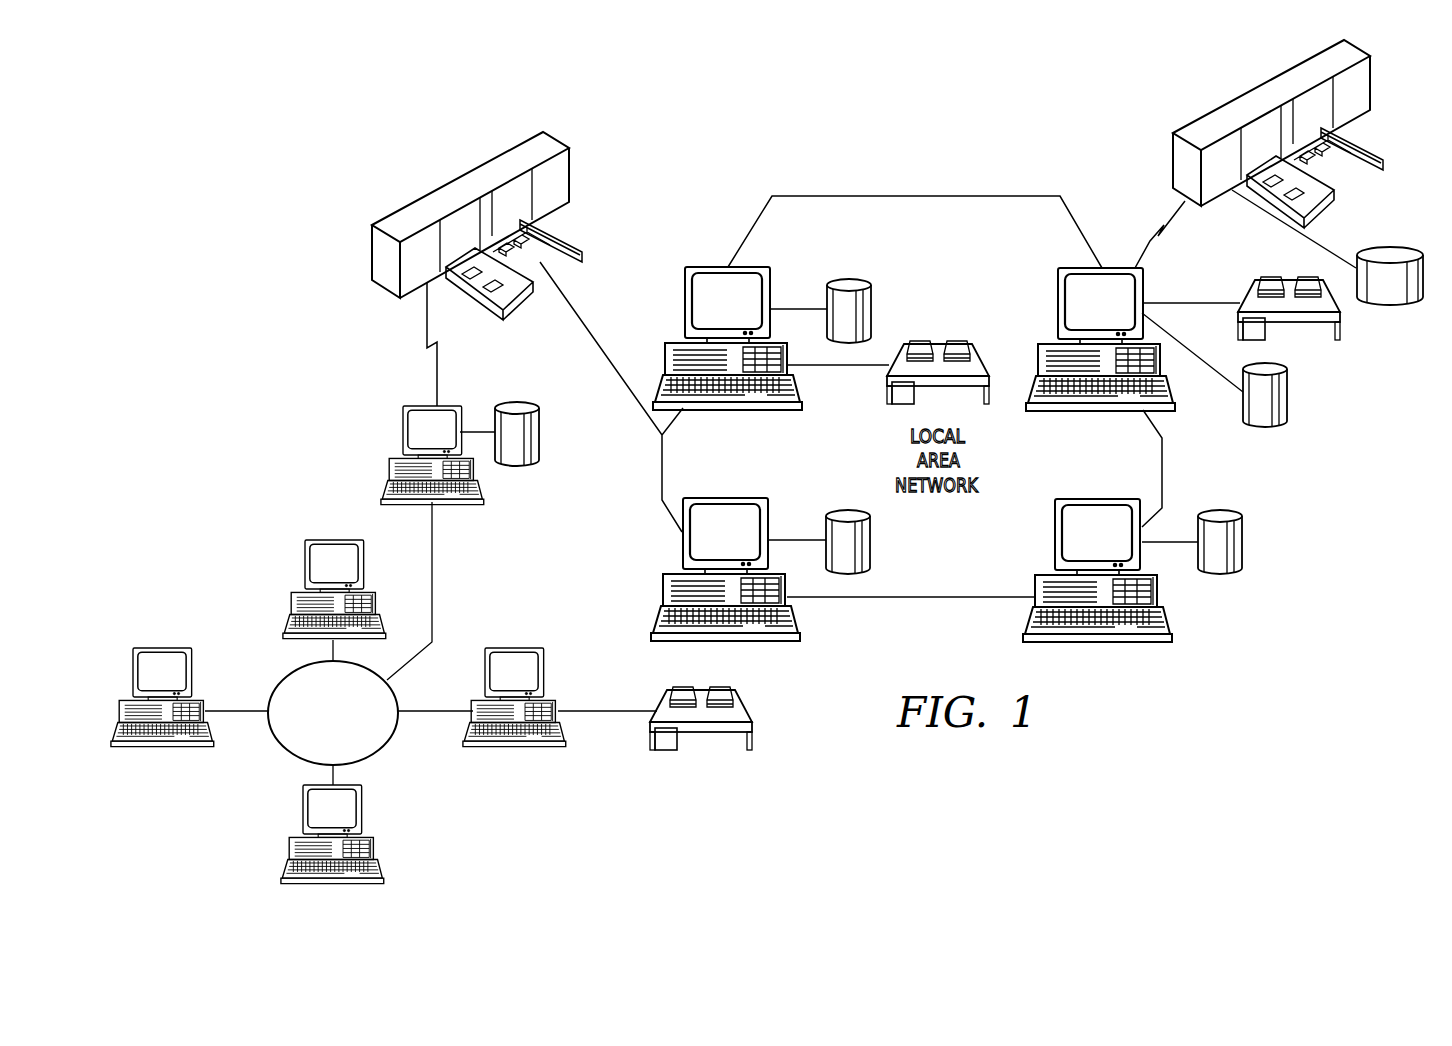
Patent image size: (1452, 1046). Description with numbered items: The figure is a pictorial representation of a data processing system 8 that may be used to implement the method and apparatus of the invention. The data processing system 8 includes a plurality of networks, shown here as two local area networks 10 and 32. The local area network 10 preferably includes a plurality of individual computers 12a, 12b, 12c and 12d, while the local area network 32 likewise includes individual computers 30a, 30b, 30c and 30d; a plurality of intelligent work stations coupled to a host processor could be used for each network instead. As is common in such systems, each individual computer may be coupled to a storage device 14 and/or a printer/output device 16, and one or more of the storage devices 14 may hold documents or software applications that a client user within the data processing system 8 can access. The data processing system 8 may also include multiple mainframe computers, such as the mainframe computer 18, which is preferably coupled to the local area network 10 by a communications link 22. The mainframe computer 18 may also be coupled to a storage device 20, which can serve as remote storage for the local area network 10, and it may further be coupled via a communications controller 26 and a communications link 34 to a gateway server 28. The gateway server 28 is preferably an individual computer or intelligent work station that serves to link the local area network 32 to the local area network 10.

The data processing system 8 is at (864, 174).
The local area network 10 is at (923, 600).
The individual computer 12a is at (707, 265).
The individual computer 12b is at (1058, 300).
The individual computer 12c is at (727, 498).
The individual computer 12d is at (1100, 498).
The storage device 14 is at (871, 307).
The printer/output device 16 is at (977, 363).
The mainframe computer 18 is at (1265, 87).
The storage device 20 is at (1403, 252).
The communications link 22 is at (1148, 238).
The communications controller 26 is at (450, 180).
The gateway server 28 is at (403, 425).
The individual computer 30a is at (160, 647).
The individual computer 30b is at (337, 540).
The individual computer 30c is at (517, 648).
The individual computer 30d is at (302, 810).
The local area network 32 is at (282, 747).
The communications link 34 is at (425, 322).